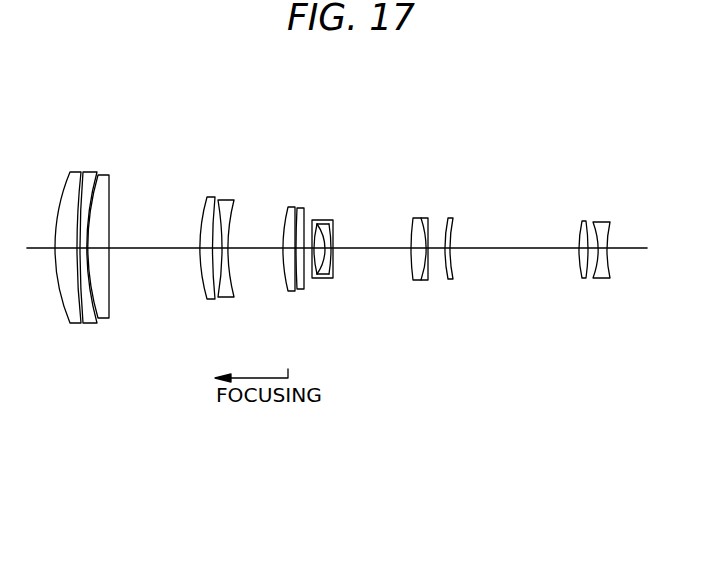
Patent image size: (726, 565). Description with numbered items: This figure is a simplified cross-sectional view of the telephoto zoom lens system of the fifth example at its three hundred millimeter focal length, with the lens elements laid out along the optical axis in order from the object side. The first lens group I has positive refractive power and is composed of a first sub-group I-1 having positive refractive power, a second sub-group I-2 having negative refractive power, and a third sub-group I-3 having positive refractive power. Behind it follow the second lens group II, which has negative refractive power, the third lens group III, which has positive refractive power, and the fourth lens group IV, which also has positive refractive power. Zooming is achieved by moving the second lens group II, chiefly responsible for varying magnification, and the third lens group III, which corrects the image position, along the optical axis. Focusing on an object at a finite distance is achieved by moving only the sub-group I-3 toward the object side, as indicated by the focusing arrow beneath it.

The first lens group I is at (311, 143).
The first sub-group I-1 is at (112, 332).
The second sub-group I-2 is at (237, 302).
The third sub-group I-3 is at (276, 302).
The second lens group II is at (309, 281).
The third lens group III is at (431, 284).
The fourth lens group IV is at (617, 285).